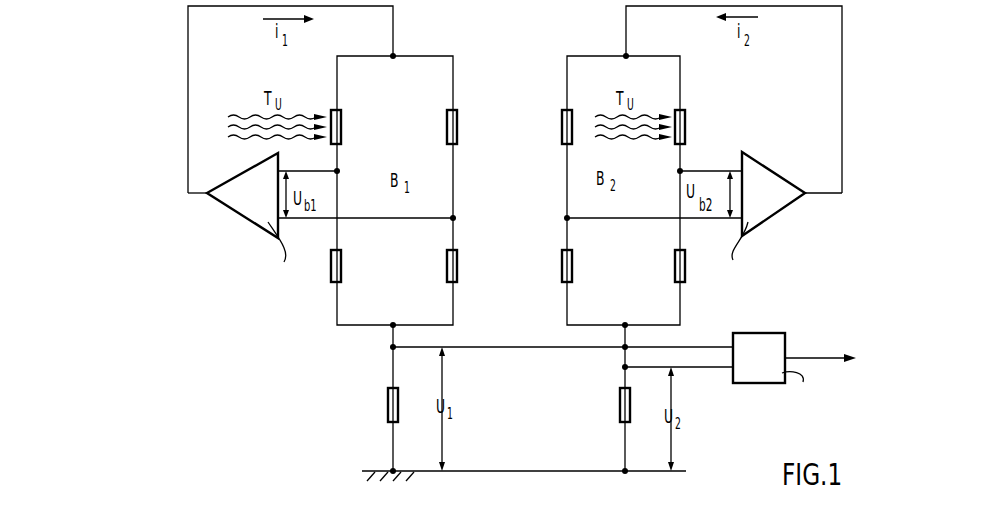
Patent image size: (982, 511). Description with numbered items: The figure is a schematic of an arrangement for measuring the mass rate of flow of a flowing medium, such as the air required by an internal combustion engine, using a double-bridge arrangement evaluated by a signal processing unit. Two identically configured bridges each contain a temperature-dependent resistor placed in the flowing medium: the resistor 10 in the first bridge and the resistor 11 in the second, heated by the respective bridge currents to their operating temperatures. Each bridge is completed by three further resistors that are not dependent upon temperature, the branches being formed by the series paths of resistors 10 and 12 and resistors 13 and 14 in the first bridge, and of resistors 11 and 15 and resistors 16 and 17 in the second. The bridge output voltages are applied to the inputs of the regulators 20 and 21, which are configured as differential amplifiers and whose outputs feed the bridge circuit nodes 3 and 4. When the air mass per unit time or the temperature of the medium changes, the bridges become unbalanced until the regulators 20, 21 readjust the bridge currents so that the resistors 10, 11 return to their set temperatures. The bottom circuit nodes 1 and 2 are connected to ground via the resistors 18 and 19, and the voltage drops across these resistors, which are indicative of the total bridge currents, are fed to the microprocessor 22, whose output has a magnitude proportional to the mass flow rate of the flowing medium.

The bottom circuit node 1 is at (391, 328).
The bottom circuit node 2 is at (625, 325).
The bridge circuit node 3 is at (393, 56).
The bridge circuit node 4 is at (626, 56).
The resistor 10 is at (341, 138).
The resistor 11 is at (677, 142).
The resistor 12 is at (337, 266).
The resistor 13 is at (452, 127).
The resistor 14 is at (452, 266).
The resistor 15 is at (683, 266).
The resistor 16 is at (562, 122).
The resistor 17 is at (562, 268).
The resistor 18 is at (388, 400).
The resistor 19 is at (620, 400).
The regulator 20 is at (250, 217).
The regulator 21 is at (770, 217).
The microprocessor 22 is at (762, 377).